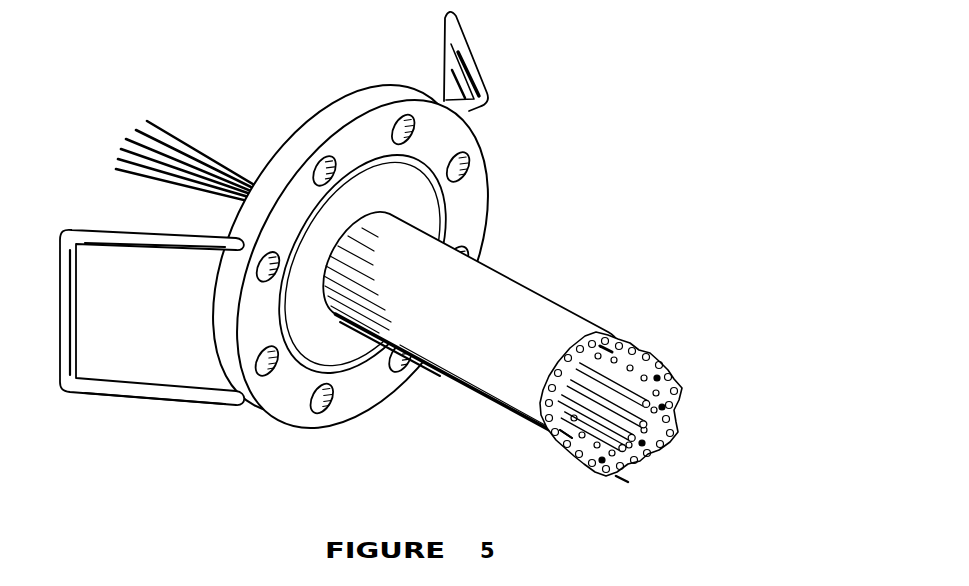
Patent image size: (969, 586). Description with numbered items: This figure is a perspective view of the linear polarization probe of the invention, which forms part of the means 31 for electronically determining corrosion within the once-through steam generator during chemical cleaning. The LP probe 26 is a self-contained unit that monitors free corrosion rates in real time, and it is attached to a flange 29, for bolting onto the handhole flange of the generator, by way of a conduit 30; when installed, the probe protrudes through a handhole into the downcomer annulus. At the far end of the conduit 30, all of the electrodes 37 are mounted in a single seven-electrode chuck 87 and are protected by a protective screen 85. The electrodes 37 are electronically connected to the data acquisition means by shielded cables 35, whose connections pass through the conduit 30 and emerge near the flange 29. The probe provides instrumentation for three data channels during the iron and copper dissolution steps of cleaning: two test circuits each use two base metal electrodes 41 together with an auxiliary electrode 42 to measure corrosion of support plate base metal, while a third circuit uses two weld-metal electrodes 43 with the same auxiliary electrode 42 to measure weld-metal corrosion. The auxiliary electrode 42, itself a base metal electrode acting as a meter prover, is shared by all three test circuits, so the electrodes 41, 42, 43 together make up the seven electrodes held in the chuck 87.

The flange 29 is at (391, 84).
The conduit 30 is at (473, 268).
The cables 35 is at (199, 128).
The protective screen 85 is at (676, 390).
The A515 Gr 70 electrodes 41 is at (674, 415).
The auxiliary electrode 42 is at (657, 450).
The E7018 electrodes 43 is at (597, 408).
The 7-electrode chuck 87 is at (606, 348).
The electrodes 37 is at (622, 480).
The means for electronically determining corrosion 31 is at (567, 441).
The linear polarization probe 26 is at (567, 441).